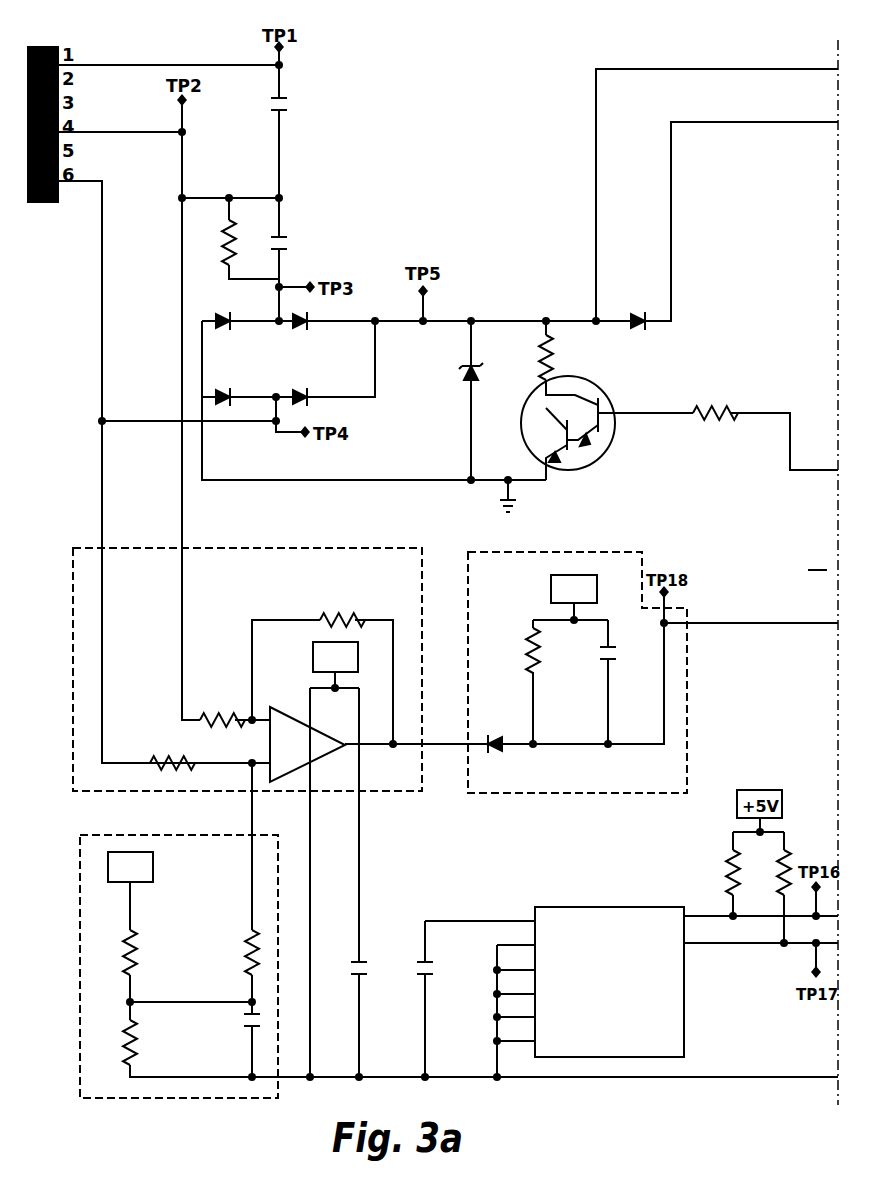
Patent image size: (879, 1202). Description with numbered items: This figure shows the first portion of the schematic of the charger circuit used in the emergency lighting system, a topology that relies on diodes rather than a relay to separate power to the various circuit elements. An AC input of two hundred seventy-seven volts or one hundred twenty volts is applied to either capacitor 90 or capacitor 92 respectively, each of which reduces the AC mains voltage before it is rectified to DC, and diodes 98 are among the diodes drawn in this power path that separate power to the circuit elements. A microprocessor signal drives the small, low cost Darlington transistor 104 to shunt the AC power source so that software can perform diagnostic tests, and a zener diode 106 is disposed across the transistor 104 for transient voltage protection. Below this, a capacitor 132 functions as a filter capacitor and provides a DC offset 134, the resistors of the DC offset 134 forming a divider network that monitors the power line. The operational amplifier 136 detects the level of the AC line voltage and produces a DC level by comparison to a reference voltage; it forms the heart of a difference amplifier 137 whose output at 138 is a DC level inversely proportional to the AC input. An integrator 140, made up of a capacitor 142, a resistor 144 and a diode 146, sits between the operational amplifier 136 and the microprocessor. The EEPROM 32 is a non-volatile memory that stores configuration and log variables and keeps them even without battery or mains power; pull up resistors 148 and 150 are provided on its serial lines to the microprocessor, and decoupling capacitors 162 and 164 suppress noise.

The capacitor 90 is at (286, 97).
The capacitor 92 is at (286, 233).
The diode 98 is at (203, 314).
The Darlington transistor 104 is at (613, 394).
The zener diode 106 is at (460, 362).
The difference amplifier 137 is at (280, 794).
The operational amplifier 136 is at (292, 705).
The DC level output 138 is at (696, 618).
The integrator 140 is at (653, 672).
The capacitor 142 is at (618, 660).
The resistor 144 is at (508, 655).
The diode 146 is at (497, 756).
The DC offset 134 is at (144, 930).
The capacitor 132 is at (240, 1026).
The decoupling capacitor 164 is at (367, 958).
The decoupling capacitor 162 is at (430, 982).
The EEPROM 32 is at (611, 903).
The pull up resistor 148 is at (712, 879).
The pull up resistor 150 is at (791, 848).